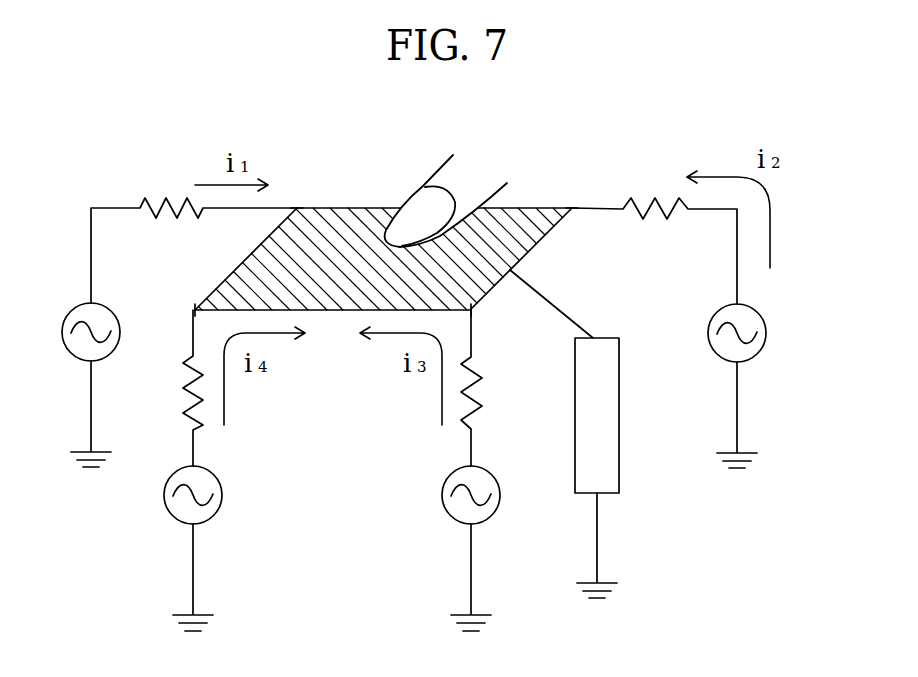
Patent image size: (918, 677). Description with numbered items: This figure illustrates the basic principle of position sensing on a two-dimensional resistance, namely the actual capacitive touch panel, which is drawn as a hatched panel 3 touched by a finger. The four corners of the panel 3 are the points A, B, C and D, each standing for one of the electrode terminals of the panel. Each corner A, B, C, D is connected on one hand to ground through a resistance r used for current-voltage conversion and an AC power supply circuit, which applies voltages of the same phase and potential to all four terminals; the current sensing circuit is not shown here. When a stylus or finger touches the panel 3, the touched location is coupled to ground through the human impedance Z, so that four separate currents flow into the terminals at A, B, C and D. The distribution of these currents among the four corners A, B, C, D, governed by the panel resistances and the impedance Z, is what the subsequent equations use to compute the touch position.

The touch panel (resistive sensing surface) 3 is at (352, 222).
The human impedance Z is at (564, 434).
The node A (panel corner electrode) A is at (296, 192).
The node B (panel corner electrode) B is at (575, 193).
The node C (panel corner electrode) C is at (181, 309).
The node D (panel corner electrode) D is at (485, 321).